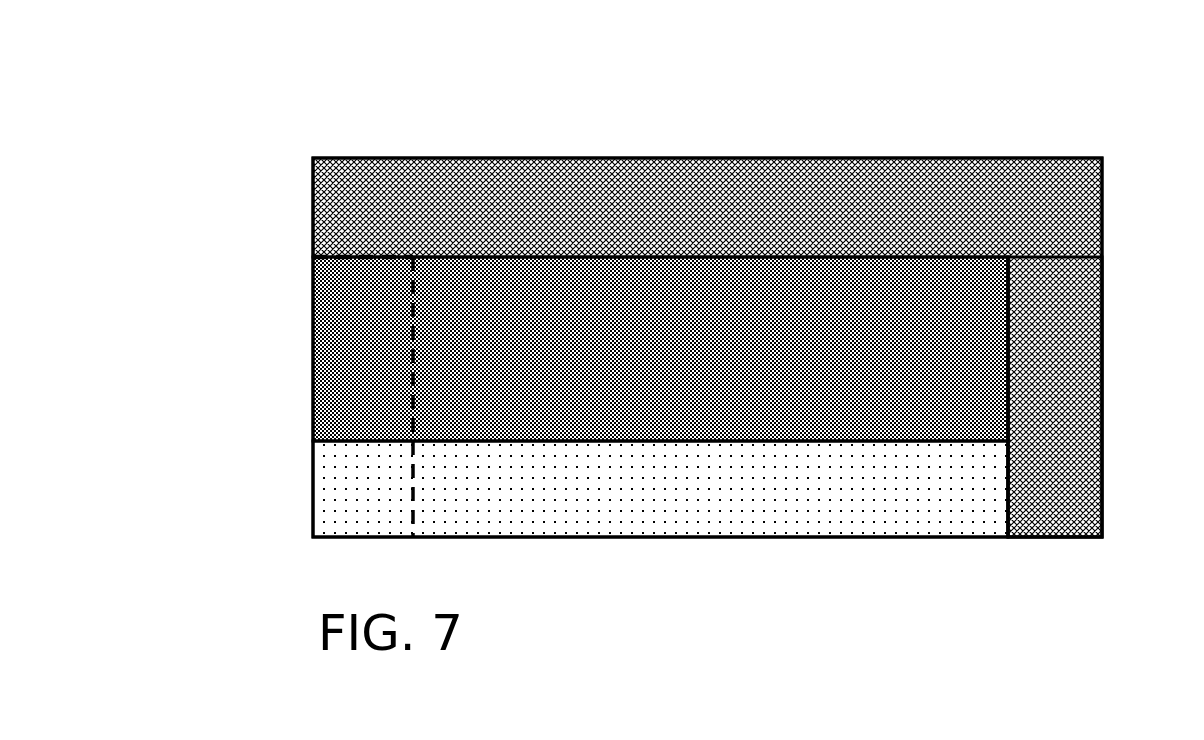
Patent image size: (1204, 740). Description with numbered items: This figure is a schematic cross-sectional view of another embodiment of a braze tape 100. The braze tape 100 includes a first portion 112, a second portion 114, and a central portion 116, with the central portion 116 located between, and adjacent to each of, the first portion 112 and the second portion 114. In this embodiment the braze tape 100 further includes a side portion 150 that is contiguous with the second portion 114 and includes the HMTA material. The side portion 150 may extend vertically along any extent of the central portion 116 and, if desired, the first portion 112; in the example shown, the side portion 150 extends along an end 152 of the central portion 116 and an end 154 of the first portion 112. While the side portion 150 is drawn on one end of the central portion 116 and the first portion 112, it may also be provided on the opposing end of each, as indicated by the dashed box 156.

The braze tape 100 is at (313, 158).
The first portion 112 is at (490, 482).
The second portion 114 is at (523, 200).
The central portion 116 is at (645, 328).
The side portion 150 is at (1053, 373).
The end of central portion 152 is at (1010, 322).
The end of first portion 154 is at (1012, 492).
The dashed box 156 is at (410, 386).